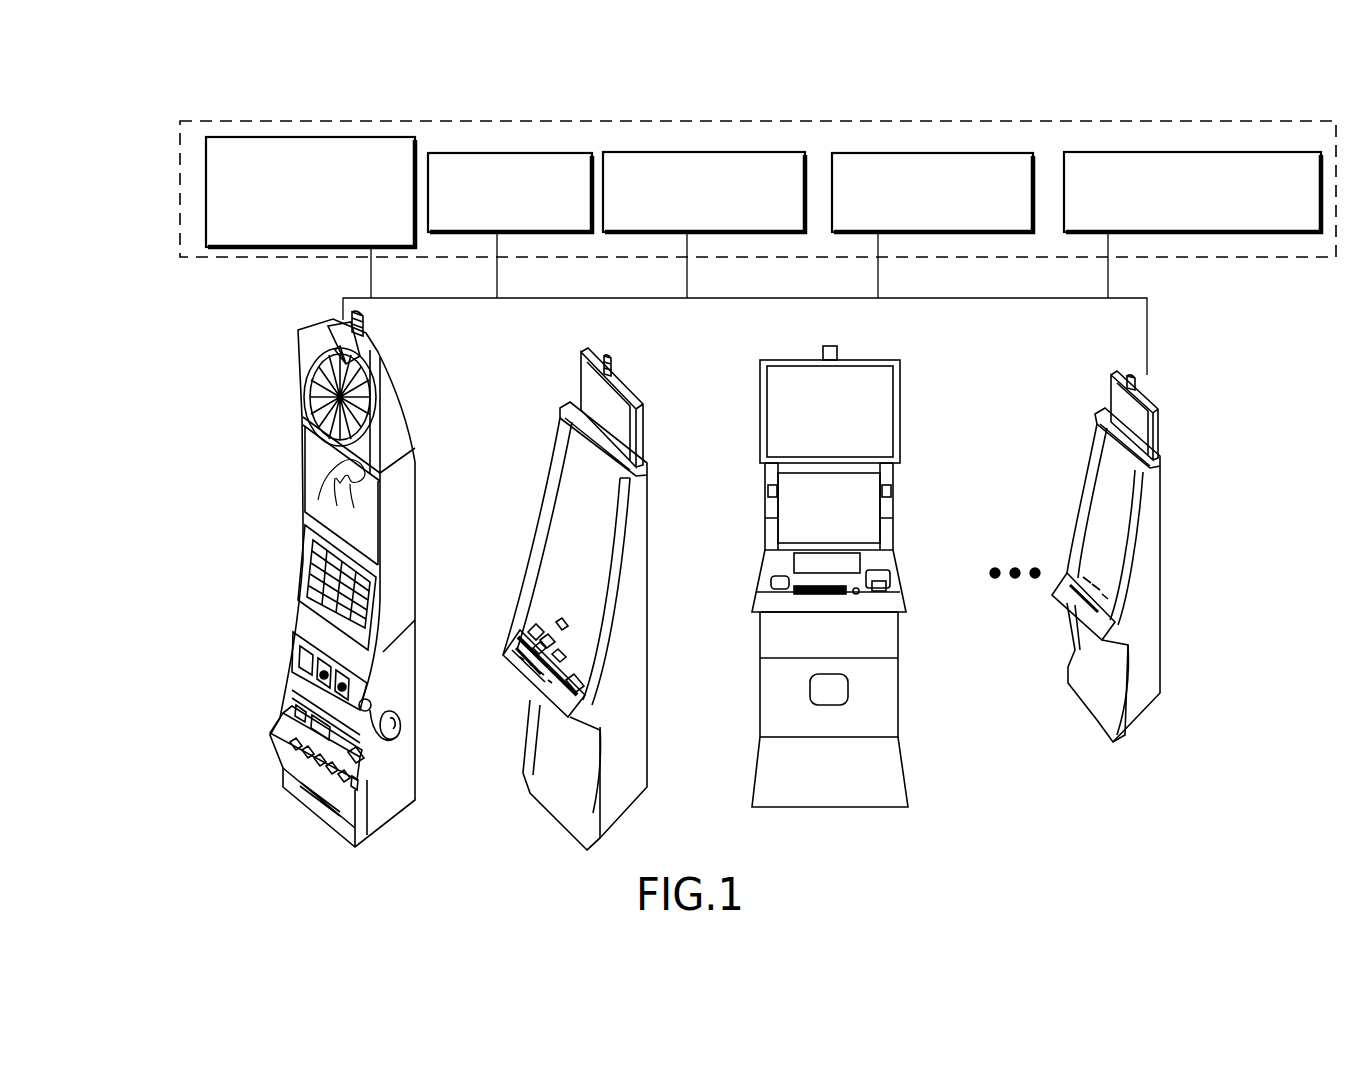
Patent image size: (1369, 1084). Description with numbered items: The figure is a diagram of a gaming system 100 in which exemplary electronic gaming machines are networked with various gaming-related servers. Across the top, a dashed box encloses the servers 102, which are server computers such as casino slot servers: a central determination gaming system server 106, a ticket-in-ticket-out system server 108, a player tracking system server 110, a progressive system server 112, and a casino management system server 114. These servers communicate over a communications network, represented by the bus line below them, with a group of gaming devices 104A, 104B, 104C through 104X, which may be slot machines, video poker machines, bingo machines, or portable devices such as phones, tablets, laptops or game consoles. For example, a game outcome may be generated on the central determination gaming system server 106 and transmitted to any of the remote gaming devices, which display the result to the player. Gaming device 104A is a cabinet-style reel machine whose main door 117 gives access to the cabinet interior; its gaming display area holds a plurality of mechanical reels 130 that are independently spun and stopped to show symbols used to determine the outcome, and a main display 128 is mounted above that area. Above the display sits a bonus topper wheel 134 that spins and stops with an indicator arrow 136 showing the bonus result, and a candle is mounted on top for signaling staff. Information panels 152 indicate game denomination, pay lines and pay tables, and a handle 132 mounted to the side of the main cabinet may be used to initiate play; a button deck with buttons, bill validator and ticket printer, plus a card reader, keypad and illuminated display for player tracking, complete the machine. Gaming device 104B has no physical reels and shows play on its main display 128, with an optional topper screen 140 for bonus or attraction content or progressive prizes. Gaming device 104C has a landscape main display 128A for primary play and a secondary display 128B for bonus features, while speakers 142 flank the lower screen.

The gaming system 100 is at (160, 163).
The servers 102 is at (1289, 260).
The gaming device 104A is at (280, 378).
The gaming device 104B is at (552, 428).
The gaming device 104C is at (736, 367).
The gaming device 104X is at (1078, 380).
The central determination gaming system server 106 is at (418, 136).
The ticket-in-ticket-out (TITO) system server 108 is at (563, 152).
The player tracking system server 110 is at (652, 152).
The progressive system server 112 is at (962, 152).
The casino management system server 114 is at (1195, 152).
The main door 117 is at (290, 760).
The main display 128 is at (368, 517).
The main display 128A is at (882, 509).
The secondary display 128B is at (897, 418).
The mechanical reels 130 is at (302, 614).
The handle 132 is at (372, 706).
The bonus topper wheel 134 is at (365, 400).
The indicator arrow 136 is at (340, 335).
The topper screen 140 is at (640, 432).
The speakers 142 is at (766, 491).
The information panels 152 is at (295, 668).